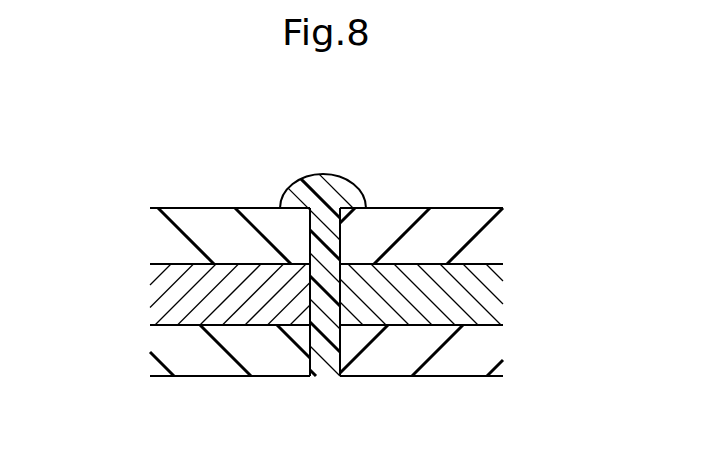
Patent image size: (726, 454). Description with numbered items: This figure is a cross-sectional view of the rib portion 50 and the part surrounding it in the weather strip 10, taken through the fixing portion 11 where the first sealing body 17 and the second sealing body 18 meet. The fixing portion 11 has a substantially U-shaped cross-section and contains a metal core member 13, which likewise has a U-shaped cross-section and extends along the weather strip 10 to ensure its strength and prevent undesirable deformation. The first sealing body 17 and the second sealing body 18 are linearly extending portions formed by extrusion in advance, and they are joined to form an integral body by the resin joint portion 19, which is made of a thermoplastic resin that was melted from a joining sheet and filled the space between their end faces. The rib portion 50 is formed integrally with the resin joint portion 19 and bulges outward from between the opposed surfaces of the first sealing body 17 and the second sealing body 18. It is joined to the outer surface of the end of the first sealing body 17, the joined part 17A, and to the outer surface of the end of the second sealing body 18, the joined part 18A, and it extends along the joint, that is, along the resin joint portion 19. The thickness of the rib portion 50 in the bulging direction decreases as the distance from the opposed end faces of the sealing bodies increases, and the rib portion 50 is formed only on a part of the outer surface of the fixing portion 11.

The weather strip 10 is at (508, 150).
The fixing portion 11 is at (152, 249).
The core member 13 is at (154, 291).
The first sealing body 17 is at (92, 240).
The second sealing body 18 is at (562, 240).
The joined part 17A is at (286, 201).
The joined part 18A is at (362, 203).
The resin joint portion 19 is at (358, 345).
The rib portion 50 is at (338, 176).